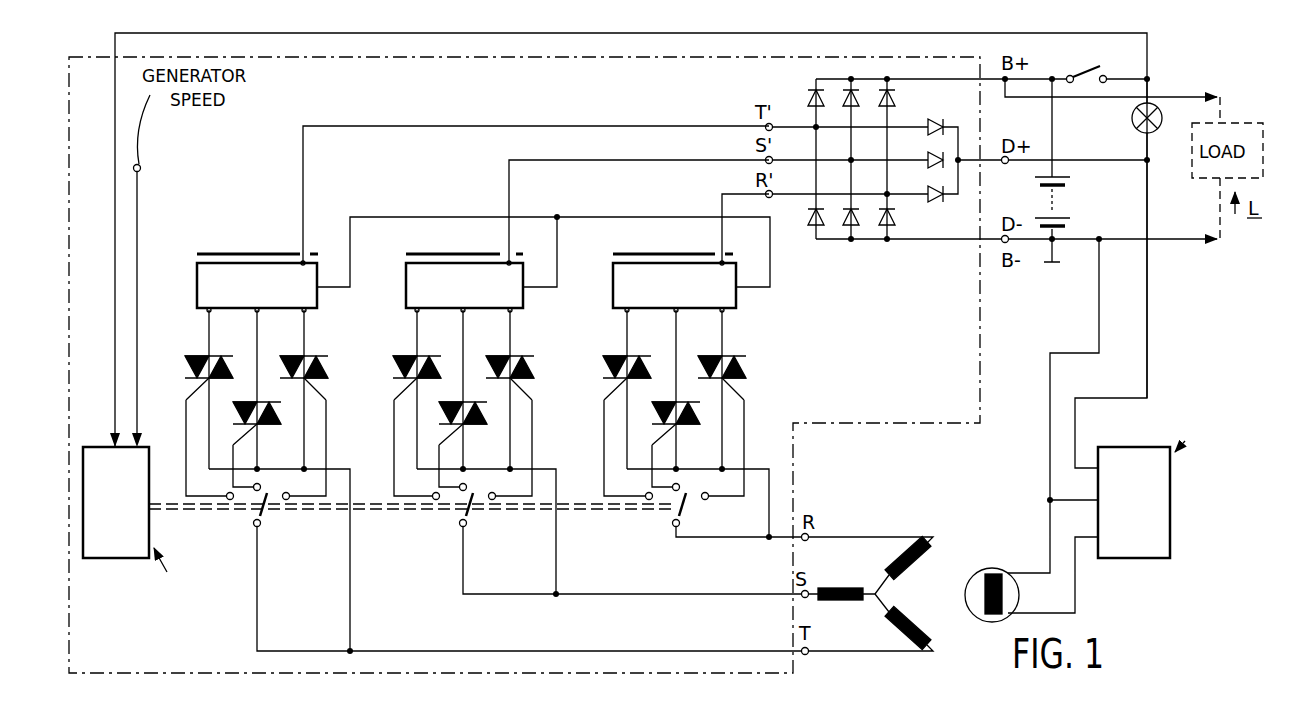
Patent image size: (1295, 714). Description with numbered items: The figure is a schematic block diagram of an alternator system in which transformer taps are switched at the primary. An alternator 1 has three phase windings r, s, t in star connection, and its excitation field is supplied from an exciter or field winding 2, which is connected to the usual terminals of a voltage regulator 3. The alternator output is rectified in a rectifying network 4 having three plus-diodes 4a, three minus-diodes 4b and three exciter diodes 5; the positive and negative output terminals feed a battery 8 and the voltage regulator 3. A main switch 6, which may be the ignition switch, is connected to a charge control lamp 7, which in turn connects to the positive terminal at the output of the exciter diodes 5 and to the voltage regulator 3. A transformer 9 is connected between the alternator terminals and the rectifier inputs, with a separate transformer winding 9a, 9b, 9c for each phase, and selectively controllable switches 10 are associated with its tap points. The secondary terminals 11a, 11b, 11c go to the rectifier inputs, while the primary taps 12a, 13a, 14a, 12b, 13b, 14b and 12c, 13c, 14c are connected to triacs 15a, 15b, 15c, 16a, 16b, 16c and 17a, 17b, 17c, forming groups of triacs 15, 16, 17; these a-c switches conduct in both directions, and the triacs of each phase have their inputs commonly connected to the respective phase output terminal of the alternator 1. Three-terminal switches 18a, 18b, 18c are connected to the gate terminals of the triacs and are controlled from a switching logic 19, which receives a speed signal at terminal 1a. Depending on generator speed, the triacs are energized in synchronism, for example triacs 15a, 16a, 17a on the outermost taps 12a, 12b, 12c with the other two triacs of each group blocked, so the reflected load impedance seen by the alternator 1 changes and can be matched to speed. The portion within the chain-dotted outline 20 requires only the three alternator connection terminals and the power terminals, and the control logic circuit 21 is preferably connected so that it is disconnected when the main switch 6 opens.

The alternator 1 is at (938, 556).
The speed signal terminal 1a is at (143, 164).
The exciter or field winding 2 is at (994, 571).
The voltage regulator 3 is at (1134, 480).
The rectifying network 4 is at (800, 109).
The plus-diodes 4a is at (835, 88).
The minus-diodes 4b is at (868, 223).
The exciter diodes 5 is at (941, 115).
The main switch 6 is at (1073, 70).
The charge control lamp 7 is at (1133, 116).
The battery 8 is at (1058, 203).
The transformer 9 is at (192, 283).
The transformer winding 9a is at (483, 263).
The transformer winding 9b is at (481, 264).
The transformer winding 9c is at (674, 286).
The selectively controllable switches 10 is at (422, 524).
The secondary terminal 11a is at (300, 260).
The secondary terminal 11b is at (507, 260).
The secondary terminal 11c is at (720, 260).
The primary tap 12a is at (210, 323).
The primary tap 13a is at (258, 323).
The primary tap 14a is at (305, 323).
The primary tap 12b is at (418, 323).
The primary tap 13b is at (464, 323).
The primary tap 14b is at (511, 323).
The primary tap 12c is at (628, 323).
The primary tap 13c is at (677, 323).
The primary tap 14c is at (723, 323).
The group of triacs 15 is at (195, 338).
The triac 15a is at (190, 367).
The triac 15b is at (262, 427).
The triac 15c is at (328, 372).
The group of triacs 16 is at (405, 338).
The triac 16a is at (400, 368).
The triac 16b is at (468, 427).
The triac 16c is at (534, 372).
The group of triacs 17 is at (615, 338).
The triac 17a is at (610, 368).
The triac 17b is at (681, 427).
The triac 17c is at (746, 372).
The three-terminal switch 18a is at (264, 514).
The three-terminal switch 18b is at (470, 514).
The three-terminal switch 18c is at (686, 510).
The switching logic 19 is at (148, 551).
The chain-dotted outline 20 is at (880, 425).
The control logic circuit 21 is at (311, 33).
The phase winding r is at (891, 568).
The phase winding s is at (835, 588).
The phase winding t is at (890, 628).